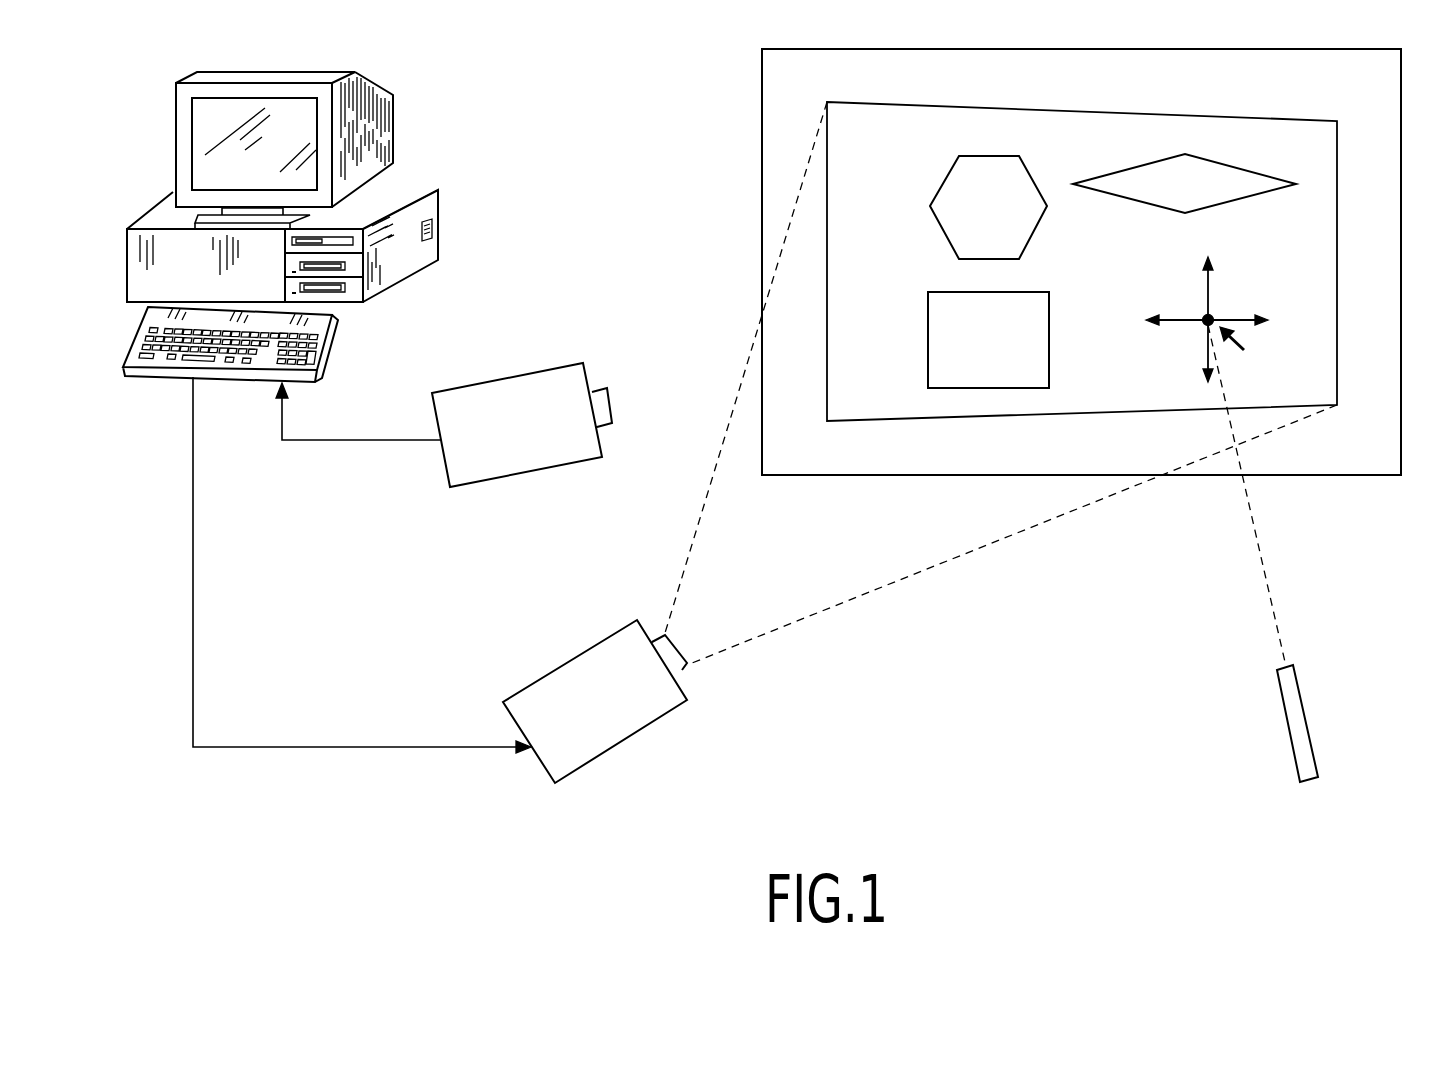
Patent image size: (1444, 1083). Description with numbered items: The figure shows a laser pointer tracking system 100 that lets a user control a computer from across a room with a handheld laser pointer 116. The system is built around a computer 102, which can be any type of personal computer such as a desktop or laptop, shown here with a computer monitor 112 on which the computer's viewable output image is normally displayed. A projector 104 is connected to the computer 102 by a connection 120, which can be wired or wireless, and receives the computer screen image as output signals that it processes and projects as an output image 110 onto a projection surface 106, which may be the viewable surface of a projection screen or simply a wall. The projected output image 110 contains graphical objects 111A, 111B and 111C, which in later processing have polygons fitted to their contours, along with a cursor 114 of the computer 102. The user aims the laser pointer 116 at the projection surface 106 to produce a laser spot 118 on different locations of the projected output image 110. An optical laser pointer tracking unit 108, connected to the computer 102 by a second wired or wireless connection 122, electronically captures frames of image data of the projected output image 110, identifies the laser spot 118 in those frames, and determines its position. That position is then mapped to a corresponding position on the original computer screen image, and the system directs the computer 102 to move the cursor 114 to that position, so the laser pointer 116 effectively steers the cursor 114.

The laser pointer tracking system 100 is at (847, 779).
The computer 102 is at (447, 145).
The projector 104 is at (578, 653).
The projection surface 106 is at (762, 88).
The optical laser pointer tracking unit 108 is at (515, 373).
The output image 110 is at (1260, 115).
The graphical object 111A is at (942, 184).
The graphical object 111B is at (928, 337).
The graphical object 111C is at (1260, 197).
The computer monitor 112 is at (327, 68).
The cursor 114 is at (1239, 351).
The laser pointer 116 is at (1308, 720).
The laser spot 118 is at (1208, 320).
The connection 120 is at (360, 747).
The connection 122 is at (358, 440).